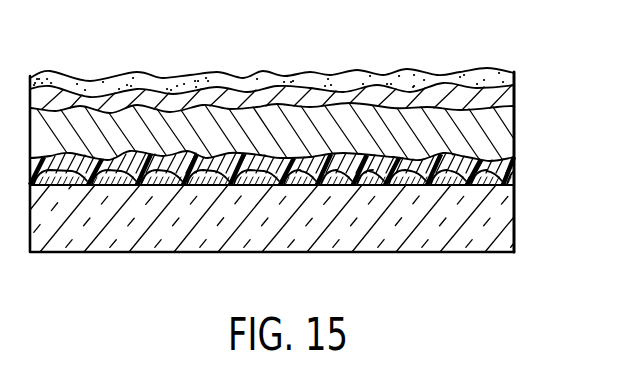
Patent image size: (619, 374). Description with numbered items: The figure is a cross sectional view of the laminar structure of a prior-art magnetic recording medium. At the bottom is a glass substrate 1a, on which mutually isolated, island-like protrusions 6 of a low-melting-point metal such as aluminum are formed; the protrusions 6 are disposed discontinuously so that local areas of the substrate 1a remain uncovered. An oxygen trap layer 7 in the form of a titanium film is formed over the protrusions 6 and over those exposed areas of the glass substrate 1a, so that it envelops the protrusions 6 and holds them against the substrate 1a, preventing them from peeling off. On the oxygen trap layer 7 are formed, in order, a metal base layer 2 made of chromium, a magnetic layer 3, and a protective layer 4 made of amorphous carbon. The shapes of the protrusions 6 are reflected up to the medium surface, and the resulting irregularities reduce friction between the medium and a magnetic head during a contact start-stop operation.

The glass substrate 1a is at (505, 220).
The metal base layer 2 is at (493, 125).
The magnetic layer 3 is at (502, 100).
The protective layer 4 is at (483, 75).
The protrusions 6 is at (198, 184).
The oxygen trap layer 7 is at (472, 163).